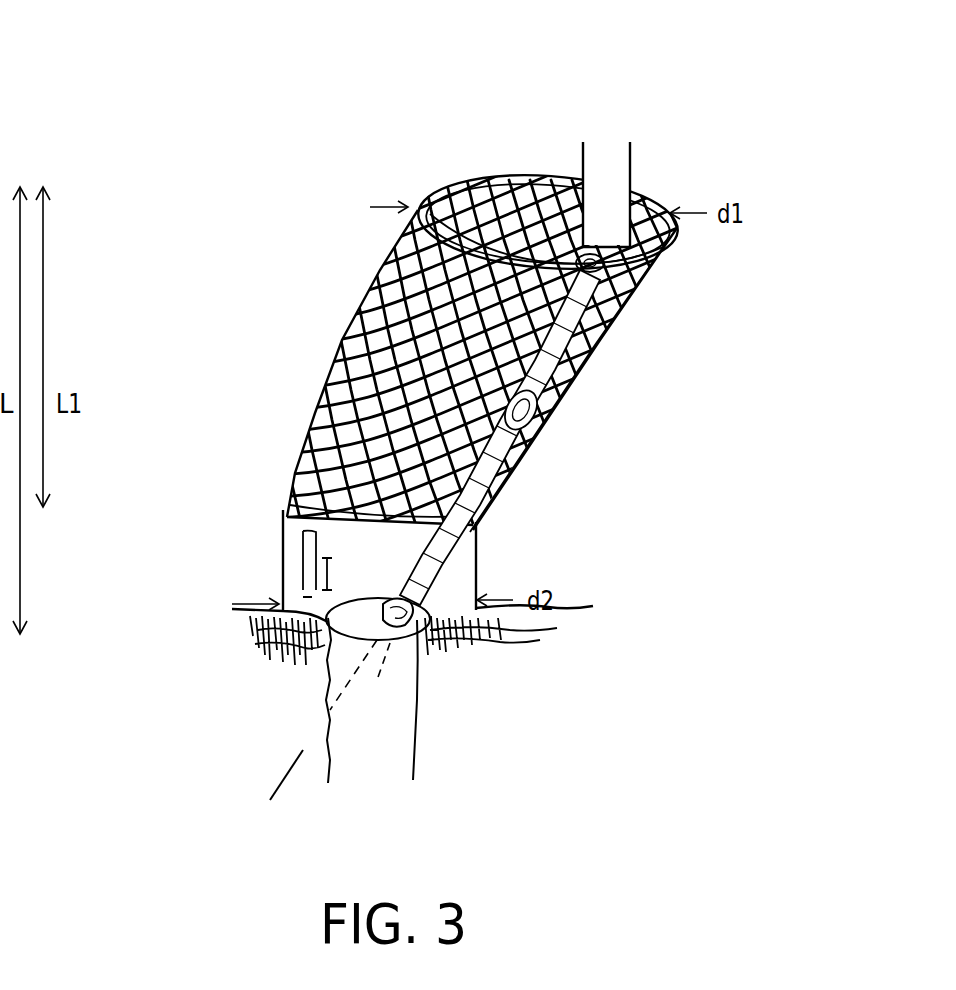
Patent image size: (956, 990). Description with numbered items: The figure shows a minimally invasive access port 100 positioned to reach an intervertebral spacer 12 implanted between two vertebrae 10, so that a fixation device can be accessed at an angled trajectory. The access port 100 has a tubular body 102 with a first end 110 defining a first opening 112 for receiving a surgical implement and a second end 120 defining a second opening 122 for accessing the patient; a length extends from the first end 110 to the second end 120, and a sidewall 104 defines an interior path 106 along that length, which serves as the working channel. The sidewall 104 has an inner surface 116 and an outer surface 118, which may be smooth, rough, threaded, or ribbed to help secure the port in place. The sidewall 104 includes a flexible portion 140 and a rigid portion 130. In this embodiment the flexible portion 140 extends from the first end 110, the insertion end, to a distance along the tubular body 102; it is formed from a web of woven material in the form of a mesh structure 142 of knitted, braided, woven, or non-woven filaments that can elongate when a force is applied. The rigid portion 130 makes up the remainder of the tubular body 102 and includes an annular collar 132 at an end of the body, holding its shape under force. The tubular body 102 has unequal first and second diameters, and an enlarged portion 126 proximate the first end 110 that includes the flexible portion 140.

The access port 100 is at (187, 63).
The tubular body 102 is at (242, 383).
The sidewall 104 is at (345, 325).
The interior path 106 is at (572, 123).
The first end 110 is at (418, 193).
The first opening 112 is at (492, 187).
The inner surface 116 is at (525, 200).
The outer surface 118 is at (300, 468).
The second end 120 is at (262, 632).
The second opening 122 is at (433, 637).
The enlarged portion 126 is at (607, 320).
The rigid portion 130 is at (292, 545).
The annular collar 132 is at (465, 573).
The flexible portion 140 is at (330, 365).
The mesh structure 142 is at (545, 398).
The vertebrae 10 is at (278, 725).
The intervertebral spacer 12 is at (398, 745).